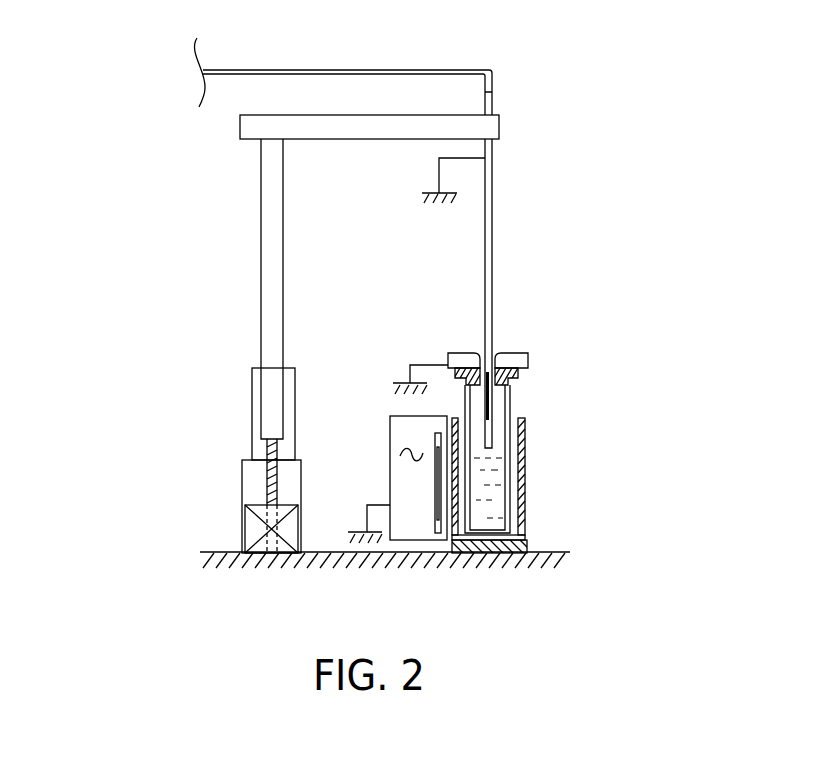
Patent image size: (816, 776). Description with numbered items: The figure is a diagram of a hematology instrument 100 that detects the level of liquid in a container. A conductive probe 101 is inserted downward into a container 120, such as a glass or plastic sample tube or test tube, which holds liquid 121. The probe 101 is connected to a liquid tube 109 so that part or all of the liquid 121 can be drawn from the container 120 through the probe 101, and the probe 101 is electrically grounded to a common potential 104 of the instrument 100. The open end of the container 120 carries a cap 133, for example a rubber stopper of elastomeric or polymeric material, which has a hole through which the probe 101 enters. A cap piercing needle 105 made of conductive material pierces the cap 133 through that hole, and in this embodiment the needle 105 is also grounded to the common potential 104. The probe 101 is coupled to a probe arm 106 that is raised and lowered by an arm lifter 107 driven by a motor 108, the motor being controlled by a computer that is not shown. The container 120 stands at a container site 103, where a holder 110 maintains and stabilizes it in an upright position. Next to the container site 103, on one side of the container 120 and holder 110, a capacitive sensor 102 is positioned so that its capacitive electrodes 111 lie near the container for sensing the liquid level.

The instrument 100 is at (102, 124).
The conductive probe 101 is at (492, 189).
The capacitive sensor 102 is at (390, 434).
The container site 103 is at (525, 558).
The common potential 104 is at (411, 199).
The cap piercing needle 105 is at (478, 398).
The probe arm 106 is at (499, 128).
The arm lifter 107 is at (254, 392).
The motor 108 is at (250, 520).
The liquid tube 109 is at (467, 70).
The holder 110 is at (525, 529).
The capacitive electrodes 111 is at (436, 505).
The container 120 is at (510, 397).
The liquid 121 is at (502, 472).
The cap 133 is at (528, 372).